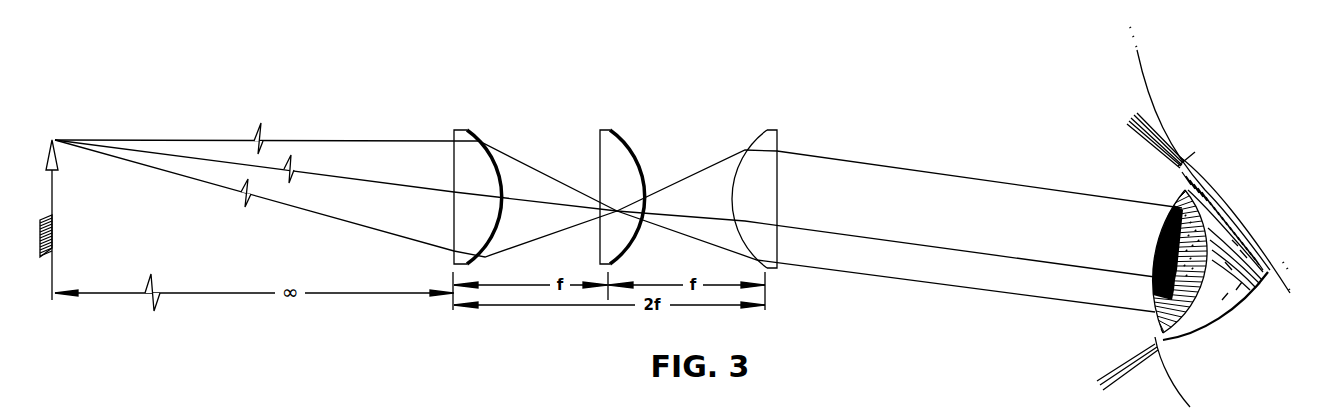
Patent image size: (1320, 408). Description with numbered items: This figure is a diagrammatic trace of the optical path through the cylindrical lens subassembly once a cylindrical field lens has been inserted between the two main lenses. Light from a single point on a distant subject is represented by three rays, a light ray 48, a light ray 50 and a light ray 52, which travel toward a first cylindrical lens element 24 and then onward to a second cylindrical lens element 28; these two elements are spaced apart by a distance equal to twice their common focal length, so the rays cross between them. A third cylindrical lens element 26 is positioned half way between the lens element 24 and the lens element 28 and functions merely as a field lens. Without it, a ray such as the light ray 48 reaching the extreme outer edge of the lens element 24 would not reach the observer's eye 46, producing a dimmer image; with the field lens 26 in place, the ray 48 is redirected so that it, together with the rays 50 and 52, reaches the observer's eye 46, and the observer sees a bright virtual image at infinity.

The first cylindrical lens element 24 is at (460, 128).
The third cylindrical lens element 26 is at (608, 128).
The cylindrical lens element 28 is at (770, 128).
The observer's eye 46 is at (1147, 321).
The light ray 48 is at (396, 140).
The light ray 50 is at (414, 180).
The light ray 52 is at (380, 233).